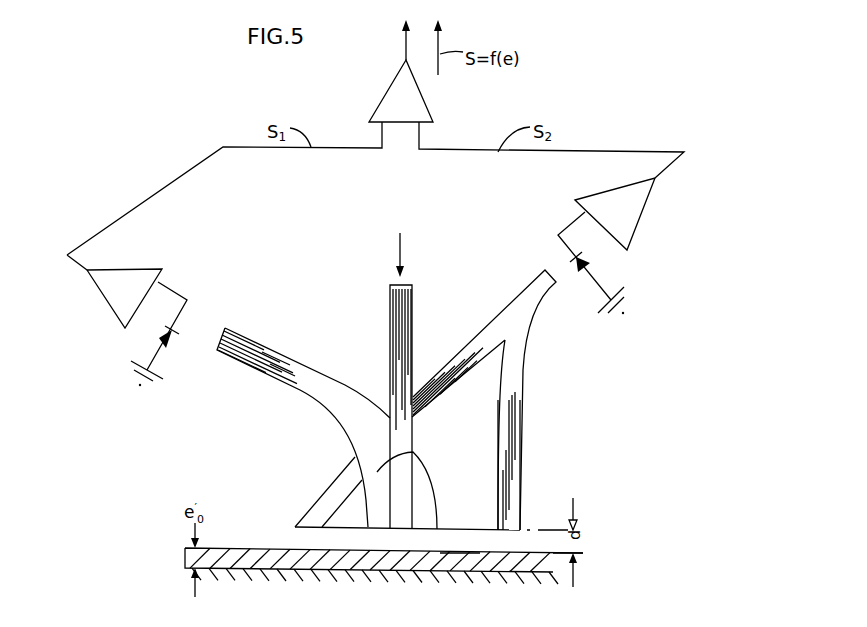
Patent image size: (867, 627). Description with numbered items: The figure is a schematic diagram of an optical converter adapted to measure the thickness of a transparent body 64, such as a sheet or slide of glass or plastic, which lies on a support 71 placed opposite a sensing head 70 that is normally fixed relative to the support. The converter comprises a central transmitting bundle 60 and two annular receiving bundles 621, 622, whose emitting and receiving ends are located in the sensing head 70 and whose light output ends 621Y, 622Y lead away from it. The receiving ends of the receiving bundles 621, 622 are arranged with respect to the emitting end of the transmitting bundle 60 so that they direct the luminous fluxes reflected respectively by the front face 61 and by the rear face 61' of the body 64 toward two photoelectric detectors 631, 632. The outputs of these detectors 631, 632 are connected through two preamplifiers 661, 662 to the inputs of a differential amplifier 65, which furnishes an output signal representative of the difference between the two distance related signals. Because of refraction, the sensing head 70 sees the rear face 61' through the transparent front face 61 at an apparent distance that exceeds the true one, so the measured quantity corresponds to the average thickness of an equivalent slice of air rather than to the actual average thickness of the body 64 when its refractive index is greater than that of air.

The central transmitting bundle 60 is at (408, 310).
The front face 61 is at (393, 529).
The rear face 61' is at (460, 533).
The first annular receiving bundle 621 is at (418, 456).
The second annular receiving bundle 622 is at (513, 448).
The light output end of the first receiving bundle 621Y is at (225, 328).
The light output end of the second receiving bundle 622Y is at (552, 268).
The first photoelectric detector 631 is at (181, 347).
The second photoelectric detector 632 is at (571, 272).
The transparent body 64 is at (233, 557).
The differential amplifier 65 is at (397, 93).
The first preamplifier 661 is at (122, 287).
The second preamplifier 662 is at (628, 210).
The sensing head 70 is at (325, 492).
The support 71 is at (473, 580).